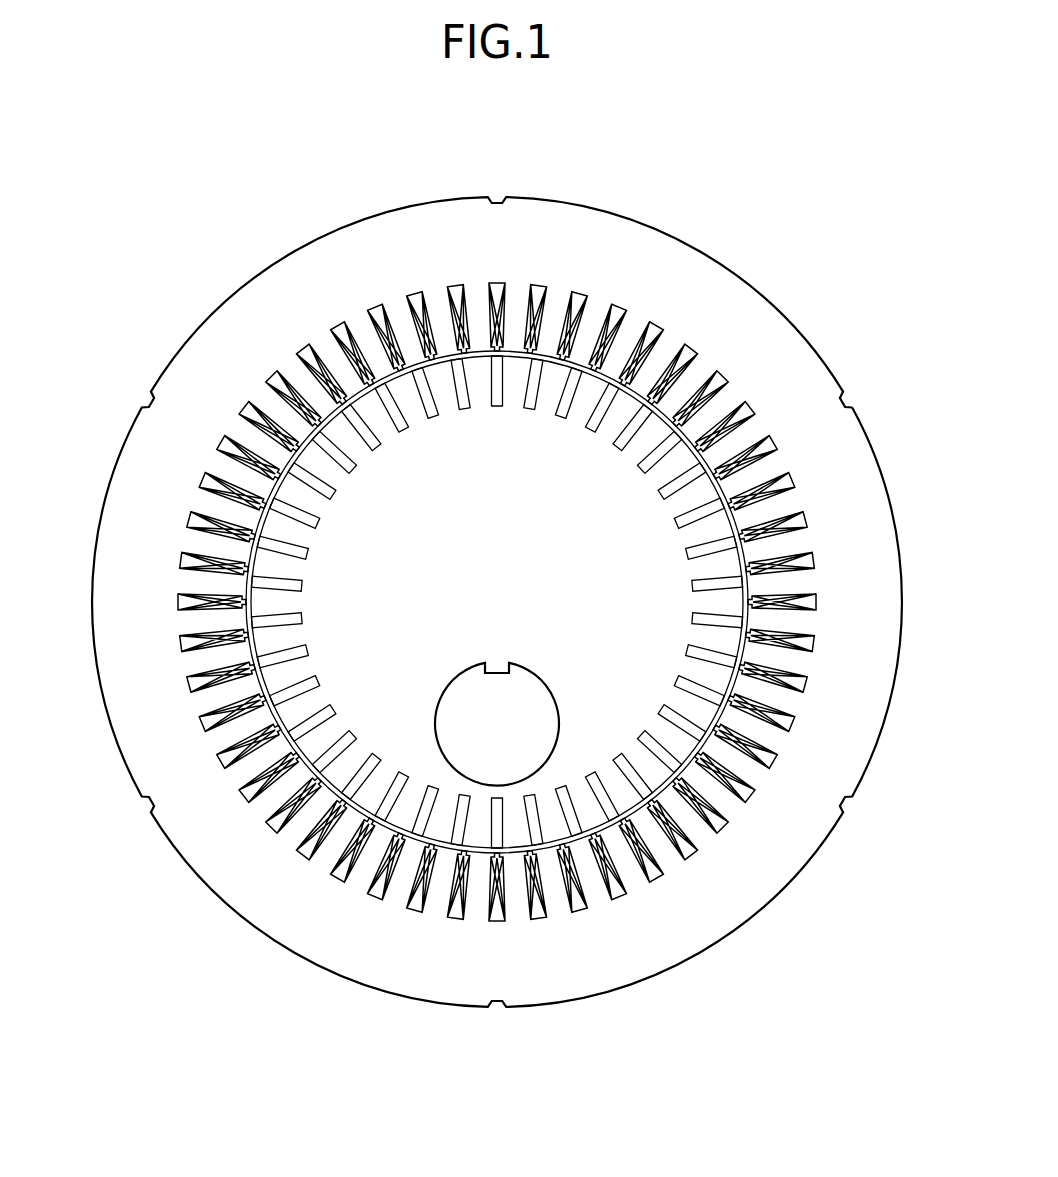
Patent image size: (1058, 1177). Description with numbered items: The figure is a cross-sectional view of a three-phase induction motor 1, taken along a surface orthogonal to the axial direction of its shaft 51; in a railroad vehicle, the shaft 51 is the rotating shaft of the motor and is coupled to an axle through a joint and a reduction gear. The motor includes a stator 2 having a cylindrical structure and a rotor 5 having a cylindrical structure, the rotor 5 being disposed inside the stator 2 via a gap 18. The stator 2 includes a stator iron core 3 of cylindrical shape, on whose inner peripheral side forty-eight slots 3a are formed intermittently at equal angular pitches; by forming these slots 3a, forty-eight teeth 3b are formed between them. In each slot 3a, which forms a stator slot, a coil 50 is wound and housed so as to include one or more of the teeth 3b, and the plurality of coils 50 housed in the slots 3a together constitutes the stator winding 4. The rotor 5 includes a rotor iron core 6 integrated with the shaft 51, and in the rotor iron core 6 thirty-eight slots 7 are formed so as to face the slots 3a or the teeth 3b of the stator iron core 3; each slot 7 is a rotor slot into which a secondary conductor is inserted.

The three-phase induction motor 1 is at (520, 564).
The stator 2 is at (520, 602).
The stator iron core 3 is at (880, 524).
The slot 3a is at (742, 410).
The tooth 3b is at (797, 580).
The stator winding 4 is at (501, 602).
The rotor 5 is at (400, 504).
The coil 50 is at (808, 683).
The shaft 51 is at (497, 633).
The rotor iron core 6 is at (338, 633).
The slot 7 is at (312, 714).
The gap 18 is at (262, 552).